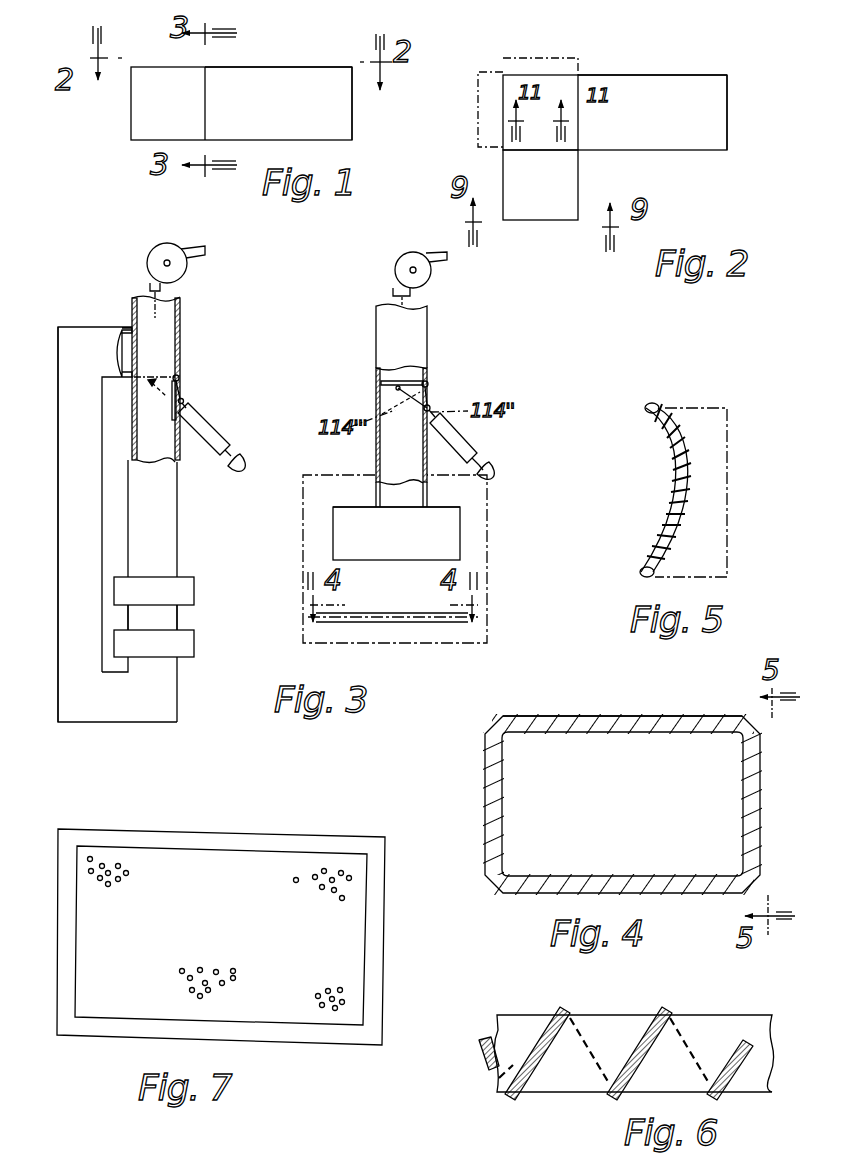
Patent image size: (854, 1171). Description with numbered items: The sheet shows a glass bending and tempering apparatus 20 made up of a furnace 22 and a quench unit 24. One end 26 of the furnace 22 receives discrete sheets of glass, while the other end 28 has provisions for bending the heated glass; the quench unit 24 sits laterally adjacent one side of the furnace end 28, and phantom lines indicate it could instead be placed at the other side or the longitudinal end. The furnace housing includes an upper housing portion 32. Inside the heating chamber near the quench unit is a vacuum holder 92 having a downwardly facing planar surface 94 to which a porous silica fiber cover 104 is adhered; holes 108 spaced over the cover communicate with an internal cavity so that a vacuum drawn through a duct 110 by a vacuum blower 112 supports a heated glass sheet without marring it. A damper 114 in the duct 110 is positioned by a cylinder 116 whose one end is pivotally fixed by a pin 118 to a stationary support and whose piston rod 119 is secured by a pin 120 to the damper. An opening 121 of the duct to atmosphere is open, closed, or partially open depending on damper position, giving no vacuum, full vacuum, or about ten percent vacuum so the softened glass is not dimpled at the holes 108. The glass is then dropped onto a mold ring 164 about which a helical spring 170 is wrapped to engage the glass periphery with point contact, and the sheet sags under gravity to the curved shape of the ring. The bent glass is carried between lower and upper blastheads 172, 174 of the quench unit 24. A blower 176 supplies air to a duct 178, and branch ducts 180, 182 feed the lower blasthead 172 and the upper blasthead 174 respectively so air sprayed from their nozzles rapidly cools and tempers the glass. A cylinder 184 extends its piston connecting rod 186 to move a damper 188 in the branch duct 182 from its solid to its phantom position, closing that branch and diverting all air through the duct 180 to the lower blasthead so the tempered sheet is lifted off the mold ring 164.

In FIG. 1, the glass bending and tempering apparatus 20 is at (284, 60).
In FIG. 2, the glass bending and tempering apparatus 20 is at (601, 67).
In FIG. 3, the glass bending and tempering apparatus 20 is at (300, 330).
In FIG. 1, the furnace 22 is at (308, 75).
In FIG. 2, the furnace 22 is at (656, 76).
In FIG. 3, the furnace 22 is at (490, 503).
In FIG. 1, the quench unit 24 is at (153, 70).
In FIG. 2, the quench unit 24 is at (490, 72).
In FIG. 3, the quench unit 24 is at (212, 612).
In FIG. 1, the one end of the furnace 26 is at (335, 115).
In FIG. 2, the one end of the furnace 26 is at (715, 117).
In FIG. 2, the other end of the furnace 28 is at (562, 80).
In FIG. 3, the upper housing portion 32 is at (494, 478).
In FIG. 3, the vacuum holder 92 is at (465, 536).
In FIG. 7, the vacuum holder 92 is at (303, 832).
In FIG. 3, the downwardly facing planar surface 94 is at (390, 567).
In FIG. 7, the downwardly facing planar surface 94 is at (234, 840).
In FIG. 7, the sheet-like cover 104 is at (178, 865).
In FIG. 7, the holes 108 is at (212, 962).
In FIG. 3, the duct 110 is at (430, 481).
In FIG. 3, the vacuum blower 112 is at (400, 272).
In FIG. 3, the damper 114 is at (386, 380).
In FIG. 3, the cylinder 116 is at (458, 443).
In FIG. 3, the pin 118 is at (490, 465).
In FIG. 3, the piston rod 119 is at (427, 398).
In FIG. 3, the pin 120 is at (396, 390).
In FIG. 3, the opening 121 is at (423, 422).
In FIG. 3, the mold ring 164 is at (457, 627).
In FIG. 5, the mold ring 164 is at (648, 403).
In FIG. 4, the mold ring 164 is at (484, 740).
In FIG. 6, the mold ring 164 is at (567, 1094).
In FIG. 5, the helical spring 170 is at (668, 478).
In FIG. 4, the helical spring 170 is at (597, 720).
In FIG. 6, the helical spring 170 is at (552, 1028).
In FIG. 3, the lower blasthead 172 is at (197, 645).
In FIG. 3, the upper blasthead 174 is at (197, 578).
In FIG. 3, the blower 176 is at (158, 257).
In FIG. 3, the duct 178 is at (185, 312).
In FIG. 3, the branch duct 180 is at (67, 527).
In FIG. 3, the branch duct 182 is at (180, 487).
In FIG. 3, the cylinder 184 is at (218, 421).
In FIG. 3, the piston connecting rod 186 is at (184, 403).
In FIG. 3, the damper 188 is at (182, 398).